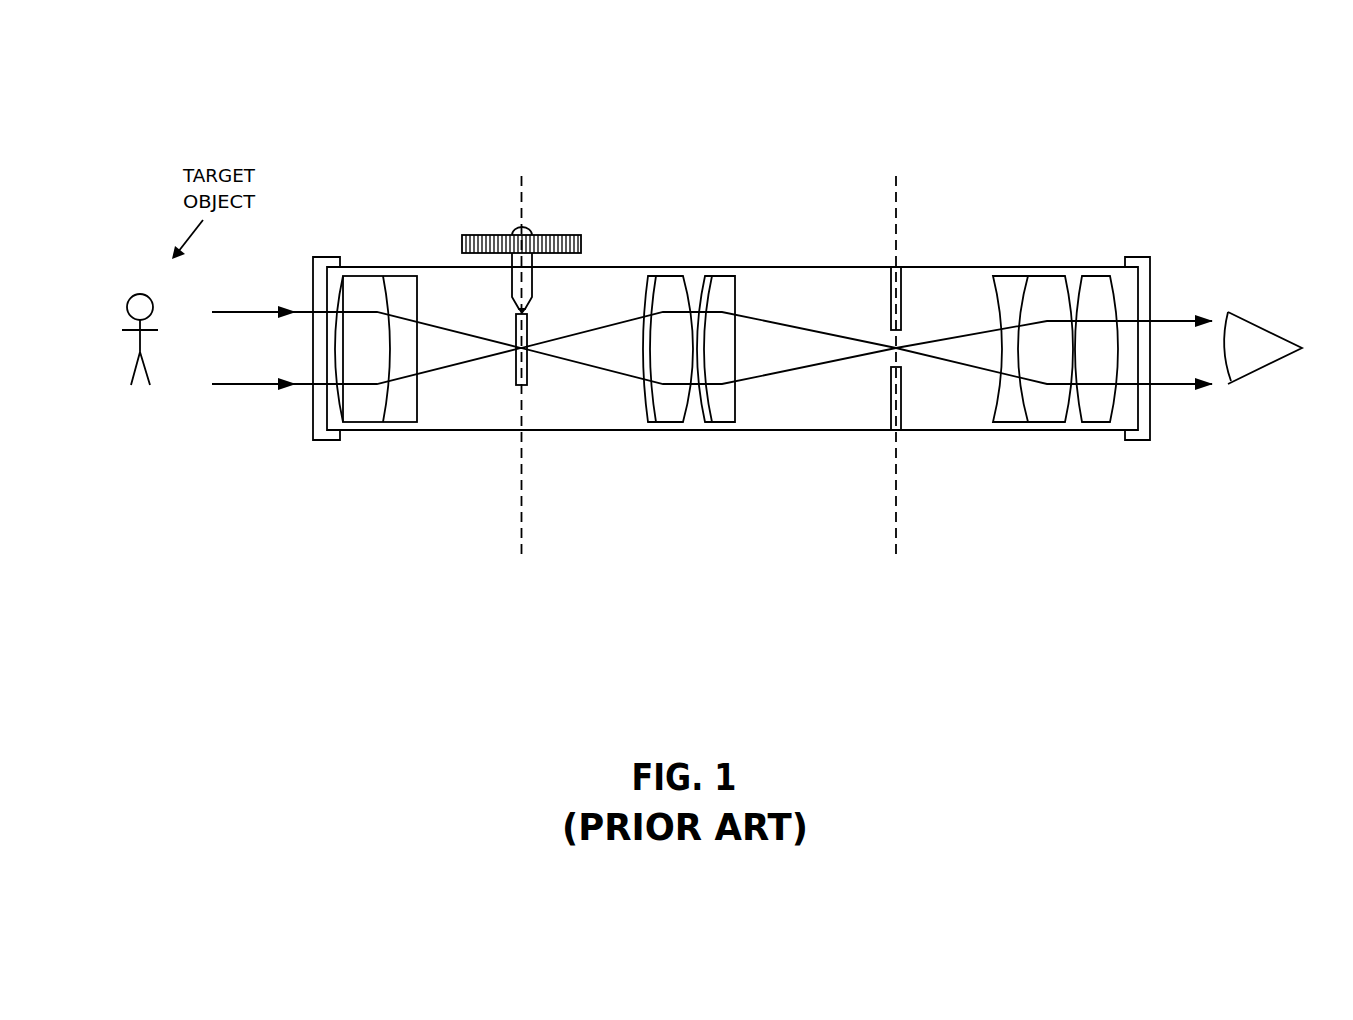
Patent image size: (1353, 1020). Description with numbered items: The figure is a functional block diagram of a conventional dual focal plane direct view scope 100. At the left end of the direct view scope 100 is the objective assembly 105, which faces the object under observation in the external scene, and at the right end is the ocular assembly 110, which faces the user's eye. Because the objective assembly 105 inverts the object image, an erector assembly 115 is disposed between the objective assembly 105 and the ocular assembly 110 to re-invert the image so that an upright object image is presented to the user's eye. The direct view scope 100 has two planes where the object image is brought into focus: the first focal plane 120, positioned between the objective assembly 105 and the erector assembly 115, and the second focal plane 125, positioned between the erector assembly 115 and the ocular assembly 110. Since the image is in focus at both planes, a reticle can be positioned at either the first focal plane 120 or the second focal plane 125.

The direct view scope 100 is at (320, 105).
The objective assembly 105 is at (322, 474).
The ocular assembly 110 is at (1140, 474).
The erector assembly 115 is at (775, 474).
The first focal plane 120 is at (522, 176).
The second focal plane 125 is at (897, 176).